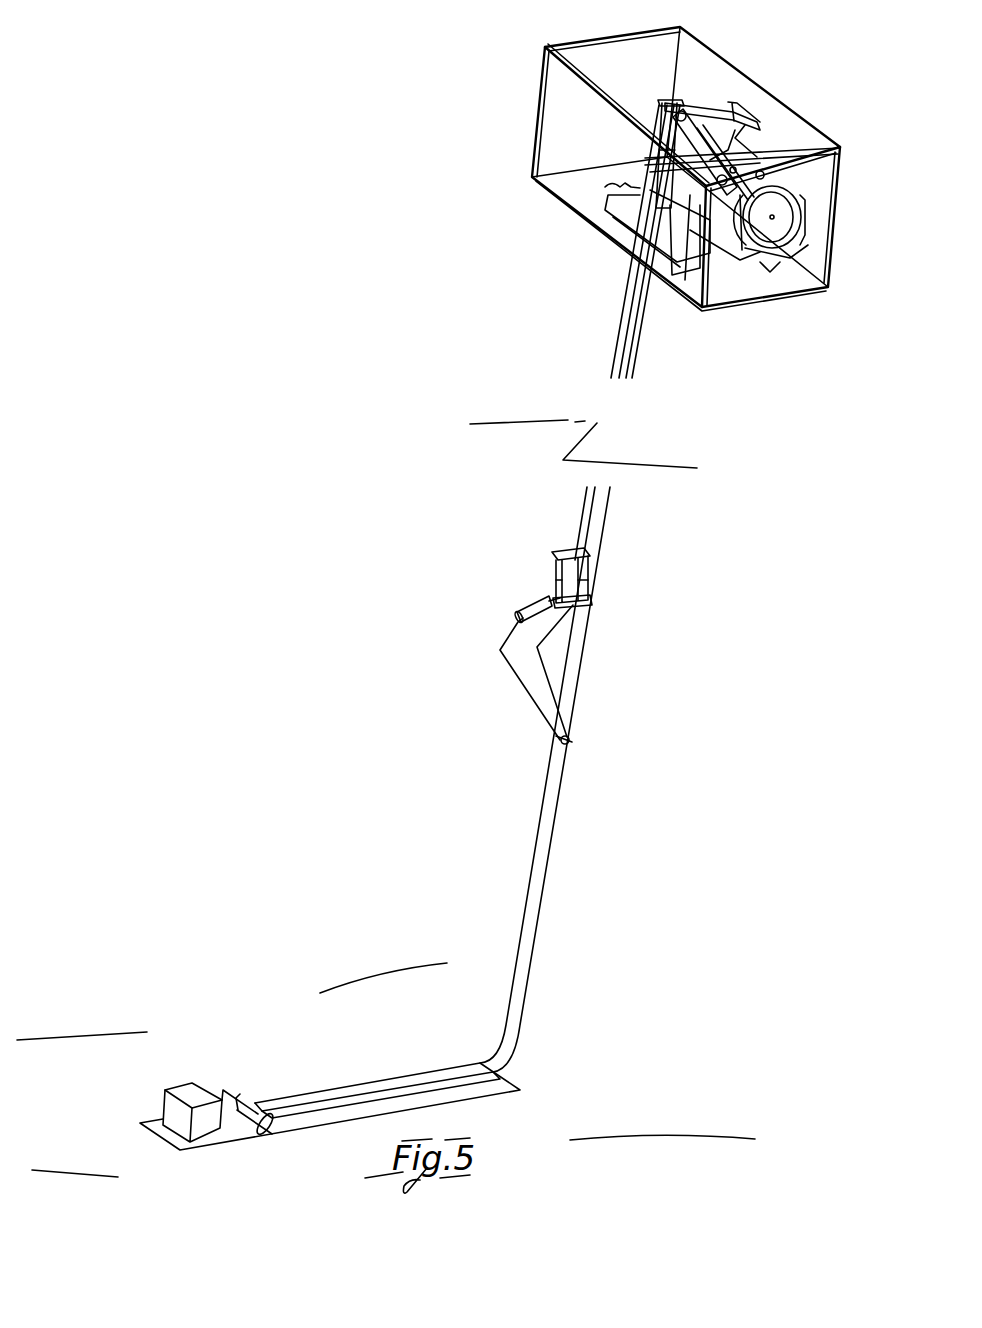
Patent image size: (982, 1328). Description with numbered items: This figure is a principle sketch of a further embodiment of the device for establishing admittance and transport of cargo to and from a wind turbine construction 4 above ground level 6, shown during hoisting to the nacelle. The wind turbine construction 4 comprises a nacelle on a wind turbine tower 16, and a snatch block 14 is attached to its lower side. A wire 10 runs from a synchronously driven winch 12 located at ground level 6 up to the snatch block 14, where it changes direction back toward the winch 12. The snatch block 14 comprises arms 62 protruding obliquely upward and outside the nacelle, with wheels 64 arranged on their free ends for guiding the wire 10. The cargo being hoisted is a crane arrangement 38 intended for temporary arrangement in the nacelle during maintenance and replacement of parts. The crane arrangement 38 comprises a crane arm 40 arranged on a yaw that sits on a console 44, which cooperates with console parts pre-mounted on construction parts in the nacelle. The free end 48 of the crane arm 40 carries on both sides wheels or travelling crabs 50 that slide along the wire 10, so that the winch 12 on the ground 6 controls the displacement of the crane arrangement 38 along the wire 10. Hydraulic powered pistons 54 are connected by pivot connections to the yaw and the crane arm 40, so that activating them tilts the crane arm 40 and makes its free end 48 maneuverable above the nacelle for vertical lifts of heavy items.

The wind turbine construction 4 is at (757, 286).
The ground level 6 is at (379, 1095).
The cable/wire 10 is at (640, 312).
The winch 12 is at (235, 1100).
The snatch block 14 is at (750, 154).
The wind turbine tower 16 is at (725, 245).
The crane arrangement 38 is at (528, 558).
The crane arm 40 is at (525, 665).
The console 44 is at (556, 580).
The free end of the crane arm 48 is at (593, 728).
The wheels/travelling crabs 50 is at (571, 748).
The hydraulic powered pistons 54 is at (530, 602).
The protruding arms 62 is at (745, 110).
The wheels 64 is at (676, 108).